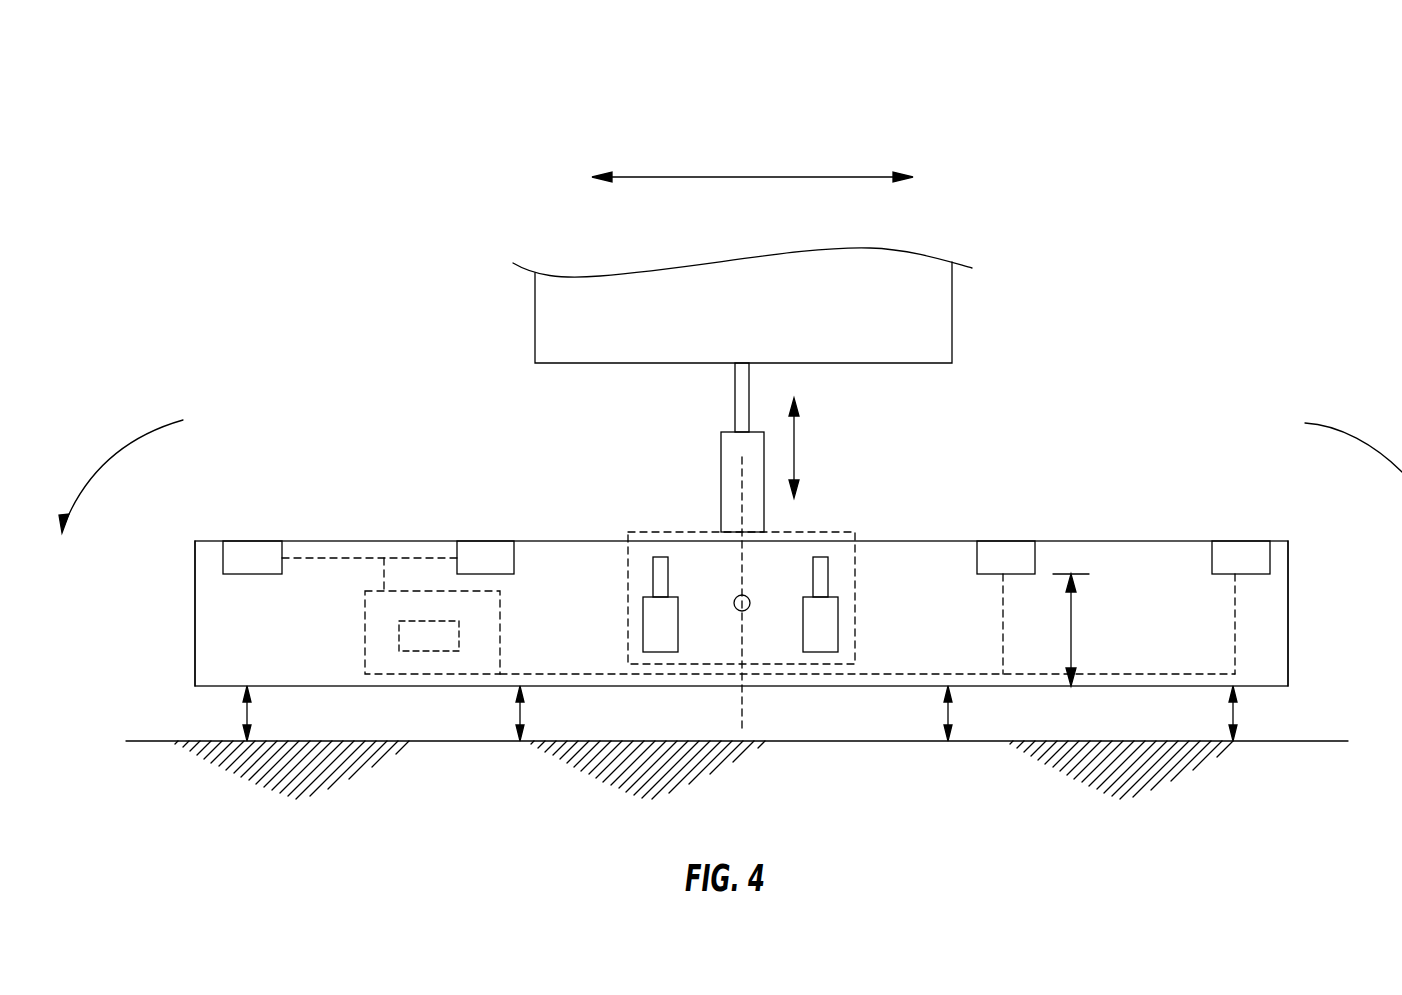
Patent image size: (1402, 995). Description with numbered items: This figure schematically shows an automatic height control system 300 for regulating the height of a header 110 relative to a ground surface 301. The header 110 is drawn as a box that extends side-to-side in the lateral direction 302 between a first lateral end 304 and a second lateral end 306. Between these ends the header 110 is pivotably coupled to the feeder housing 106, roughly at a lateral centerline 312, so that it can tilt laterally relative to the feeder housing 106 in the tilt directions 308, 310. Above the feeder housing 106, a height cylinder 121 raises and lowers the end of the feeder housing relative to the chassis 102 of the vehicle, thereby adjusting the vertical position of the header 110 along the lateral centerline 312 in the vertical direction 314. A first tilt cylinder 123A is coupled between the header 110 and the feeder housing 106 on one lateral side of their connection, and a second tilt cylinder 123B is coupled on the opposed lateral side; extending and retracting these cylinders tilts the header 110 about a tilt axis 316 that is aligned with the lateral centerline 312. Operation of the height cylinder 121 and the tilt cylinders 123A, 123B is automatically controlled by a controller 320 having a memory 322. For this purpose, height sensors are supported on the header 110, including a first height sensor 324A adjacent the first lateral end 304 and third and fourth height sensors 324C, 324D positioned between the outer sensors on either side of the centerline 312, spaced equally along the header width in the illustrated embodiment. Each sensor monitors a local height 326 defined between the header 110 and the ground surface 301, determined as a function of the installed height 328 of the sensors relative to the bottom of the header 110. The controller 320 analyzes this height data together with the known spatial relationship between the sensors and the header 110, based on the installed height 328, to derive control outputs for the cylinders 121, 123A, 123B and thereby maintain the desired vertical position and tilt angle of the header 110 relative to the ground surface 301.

The chassis 102 is at (535, 312).
The feeder housing 106 is at (837, 532).
The header 110 is at (1120, 538).
The height cylinder 121 is at (722, 509).
The first tilt cylinder 123A is at (650, 635).
The second tilt cylinder 123B is at (833, 635).
The automatic height control system 300 is at (1132, 430).
The ground surface 301 is at (168, 741).
The lateral direction 302 is at (770, 177).
The first lateral end 304 is at (195, 578).
The second lateral end 306 is at (1289, 612).
The tilt direction 308 is at (127, 428).
The tilt direction 310 is at (1355, 432).
The lateral centerline 312 is at (737, 480).
The vertical direction 314 is at (797, 457).
The tilt axis 316 is at (733, 604).
The controller 320 is at (365, 620).
The memory 322 is at (399, 636).
The first height sensor 324A is at (245, 550).
The third height sensor 324C is at (480, 550).
The fourth height sensor 324D is at (1000, 548).
The local height 326 is at (253, 715).
The installed height 328 is at (1072, 633).